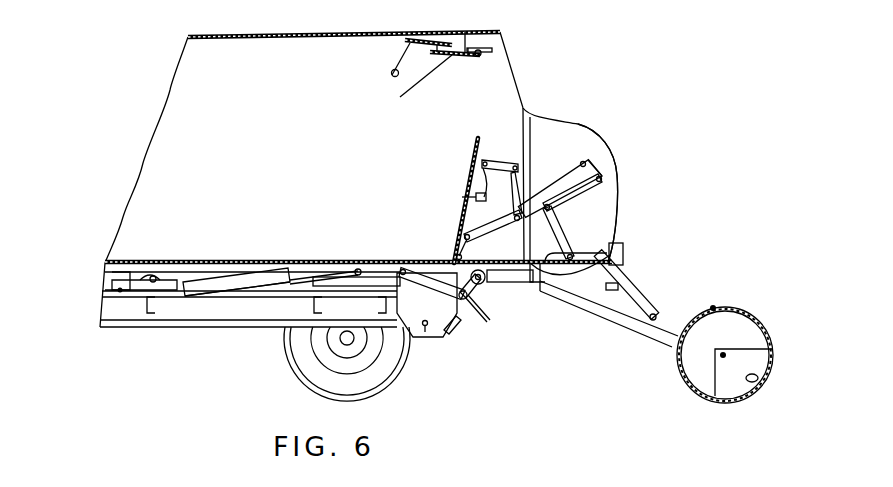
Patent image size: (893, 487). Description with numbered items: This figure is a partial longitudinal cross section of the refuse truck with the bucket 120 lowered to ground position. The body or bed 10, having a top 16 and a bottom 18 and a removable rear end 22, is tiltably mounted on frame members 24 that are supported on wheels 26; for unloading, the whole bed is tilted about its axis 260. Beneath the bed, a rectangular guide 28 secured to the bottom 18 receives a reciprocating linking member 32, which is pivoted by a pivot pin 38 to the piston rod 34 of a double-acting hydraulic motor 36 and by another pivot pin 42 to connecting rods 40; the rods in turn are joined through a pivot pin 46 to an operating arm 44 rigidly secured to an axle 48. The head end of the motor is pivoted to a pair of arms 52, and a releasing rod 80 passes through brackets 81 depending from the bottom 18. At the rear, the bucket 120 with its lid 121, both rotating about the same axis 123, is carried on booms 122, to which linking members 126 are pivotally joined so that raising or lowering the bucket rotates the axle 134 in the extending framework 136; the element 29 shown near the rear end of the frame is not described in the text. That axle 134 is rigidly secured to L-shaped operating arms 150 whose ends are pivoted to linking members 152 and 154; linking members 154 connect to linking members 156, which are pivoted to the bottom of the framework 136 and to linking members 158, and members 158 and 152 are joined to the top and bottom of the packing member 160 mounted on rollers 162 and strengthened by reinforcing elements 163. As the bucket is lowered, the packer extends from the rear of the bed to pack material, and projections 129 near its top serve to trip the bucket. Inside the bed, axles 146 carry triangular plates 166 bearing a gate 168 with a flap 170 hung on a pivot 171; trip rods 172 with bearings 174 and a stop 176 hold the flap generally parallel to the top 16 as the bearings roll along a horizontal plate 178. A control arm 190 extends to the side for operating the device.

The body or bed 10 is at (229, 126).
The top 16 is at (352, 33).
The bottom 18 is at (262, 262).
The removable rear end 22 is at (540, 284).
The frame members 24 is at (190, 327).
The wheels 26 is at (300, 378).
The guide 28 is at (340, 272).
The housing bottom 29 is at (570, 286).
The linking member 32 is at (385, 277).
The piston rod 34 is at (303, 268).
The double-acting hydraulic motor or servo-motor 36 is at (197, 296).
The pivot pin 38 is at (362, 300).
The connecting rods 40 is at (440, 272).
The pivot pin 42 is at (400, 284).
The operating arm 44 is at (470, 297).
The pivot pin 46 is at (488, 320).
The axle 48 is at (485, 283).
The arms 52 is at (150, 275).
The releasing rod 80 is at (118, 292).
The brackets 81 is at (112, 280).
The bucket 120 is at (678, 366).
The lid 121 is at (758, 378).
The booms 122 is at (680, 333).
The axis 123 is at (735, 350).
The linking members 126 is at (620, 288).
The projections 129 is at (487, 118).
The axle 134 is at (586, 160).
The extending framework 136 is at (612, 210).
The axles 146 is at (391, 75).
The operating arms 150 is at (568, 170).
The linking members 152 is at (486, 232).
The linking members 154 is at (604, 182).
The linking members 156 is at (558, 224).
The linking members 158 is at (487, 164).
The packing member 160 is at (464, 198).
The rollers 162 is at (458, 252).
The reinforcing elements 163 is at (486, 197).
The triangular shaped plate 166 is at (409, 77).
The gate 168 is at (408, 40).
The flap 170 is at (437, 56).
The pivot 171 is at (456, 58).
The trip rods 172 is at (468, 56).
The bearing 174 is at (493, 53).
The stop 176 is at (466, 46).
The plate 178 is at (488, 48).
The control arm 190 is at (458, 322).
The axis 260 is at (425, 332).